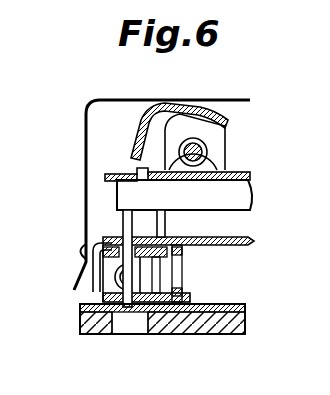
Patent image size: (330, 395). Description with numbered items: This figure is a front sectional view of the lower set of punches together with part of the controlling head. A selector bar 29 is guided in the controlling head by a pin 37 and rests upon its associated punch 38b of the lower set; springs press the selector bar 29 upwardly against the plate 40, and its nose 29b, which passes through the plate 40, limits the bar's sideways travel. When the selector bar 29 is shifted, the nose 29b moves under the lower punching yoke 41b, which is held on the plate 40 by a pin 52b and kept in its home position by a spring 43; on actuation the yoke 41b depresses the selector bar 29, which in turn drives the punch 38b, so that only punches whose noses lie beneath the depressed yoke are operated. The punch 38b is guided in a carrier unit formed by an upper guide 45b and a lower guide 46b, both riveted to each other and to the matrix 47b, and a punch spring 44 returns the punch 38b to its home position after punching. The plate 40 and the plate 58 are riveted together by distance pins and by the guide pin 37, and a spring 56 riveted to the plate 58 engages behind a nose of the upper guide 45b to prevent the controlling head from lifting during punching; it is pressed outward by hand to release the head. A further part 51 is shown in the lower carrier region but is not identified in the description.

The punching yoke 41b is at (137, 133).
The spring 43 is at (186, 136).
The pin 52b is at (224, 135).
The plate 40 is at (246, 176).
The selector bar 29 is at (247, 198).
The nose 29b is at (137, 172).
The punch 38b is at (122, 222).
The pin 37 is at (166, 233).
The plate 58 is at (254, 241).
The spring 56 is at (78, 273).
The upper guide 45b is at (182, 250).
The lower guide 46b is at (186, 298).
The punch spring 44 is at (82, 292).
The matrix 47b is at (114, 334).
The base 51 is at (178, 312).